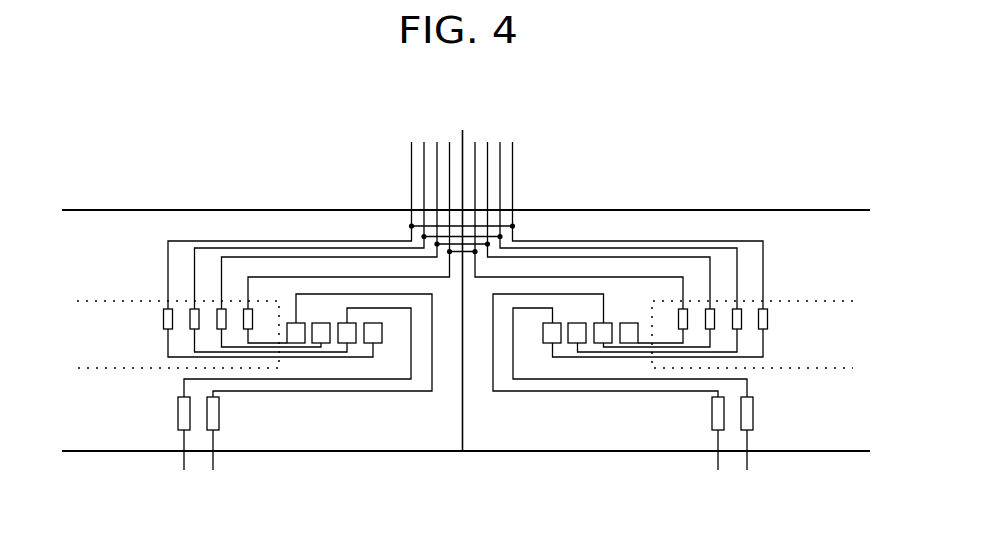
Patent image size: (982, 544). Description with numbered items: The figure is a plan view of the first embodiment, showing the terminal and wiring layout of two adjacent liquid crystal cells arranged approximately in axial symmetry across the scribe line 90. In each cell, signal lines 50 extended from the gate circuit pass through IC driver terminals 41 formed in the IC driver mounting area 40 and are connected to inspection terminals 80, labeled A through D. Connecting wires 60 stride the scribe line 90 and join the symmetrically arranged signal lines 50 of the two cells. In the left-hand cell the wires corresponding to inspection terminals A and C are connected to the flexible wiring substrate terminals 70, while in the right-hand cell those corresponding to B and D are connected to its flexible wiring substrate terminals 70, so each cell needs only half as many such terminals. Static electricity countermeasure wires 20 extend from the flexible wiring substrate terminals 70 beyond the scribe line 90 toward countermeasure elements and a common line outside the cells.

The static electricity countermeasure wire 20 is at (183, 448).
The IC driver mounting area 40 is at (110, 300).
The IC driver terminal 41 is at (163, 318).
The signal line 50 is at (412, 175).
The connecting wire 60 is at (457, 223).
The flexible wiring substrate terminal 70 is at (178, 410).
The inspection terminal 80 is at (378, 343).
The scribe line 90 is at (403, 452).